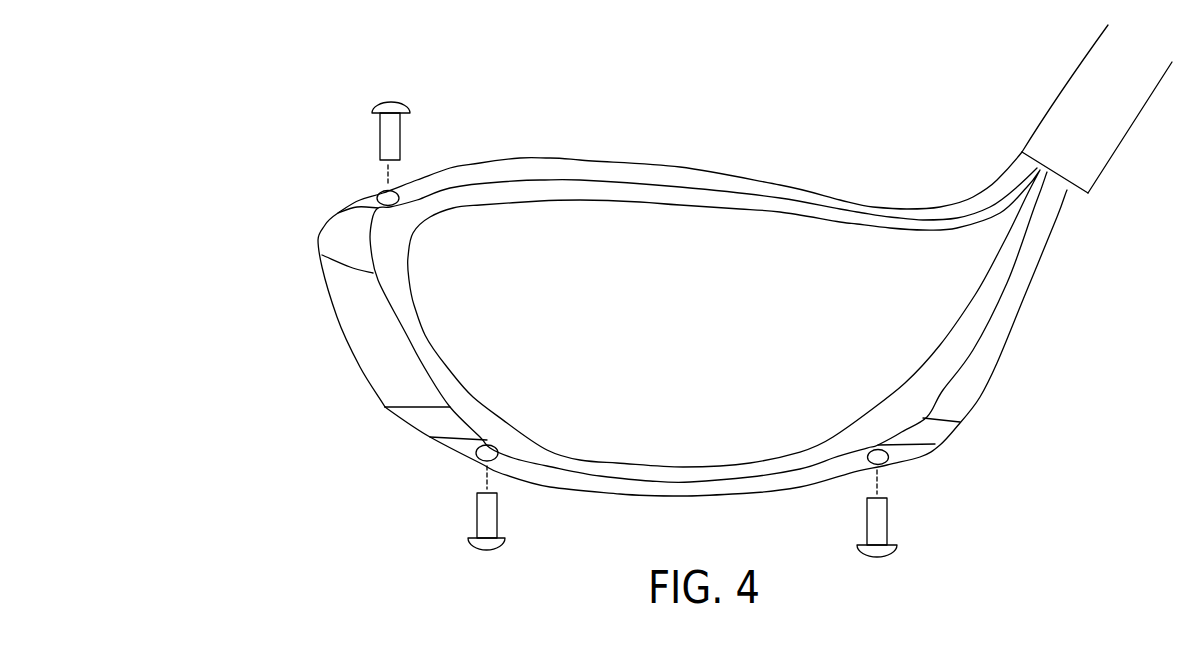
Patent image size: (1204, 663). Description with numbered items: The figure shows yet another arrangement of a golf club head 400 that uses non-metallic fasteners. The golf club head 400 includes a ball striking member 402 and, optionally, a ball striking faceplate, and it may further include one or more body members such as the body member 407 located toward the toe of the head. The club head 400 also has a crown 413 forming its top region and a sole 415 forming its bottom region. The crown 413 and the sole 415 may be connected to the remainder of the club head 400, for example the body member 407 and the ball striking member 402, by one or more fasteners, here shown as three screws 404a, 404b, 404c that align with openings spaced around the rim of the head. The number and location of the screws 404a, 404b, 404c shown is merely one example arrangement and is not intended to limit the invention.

The golf club head 400 is at (472, 82).
The ball striking member 402 is at (737, 233).
The screw 404a is at (380, 138).
The screw 404b is at (477, 517).
The screw 404c is at (887, 522).
The body member 407 is at (340, 243).
The crown 413 is at (612, 172).
The sole 415 is at (600, 490).